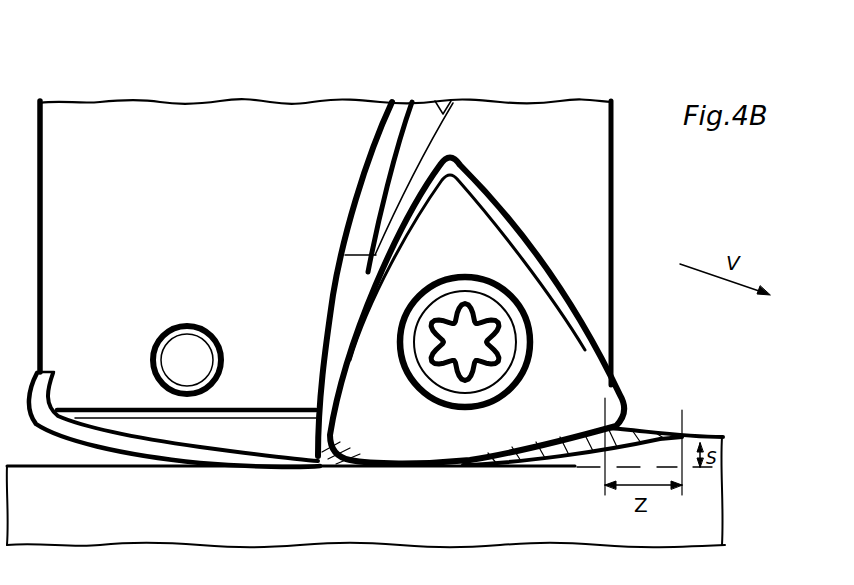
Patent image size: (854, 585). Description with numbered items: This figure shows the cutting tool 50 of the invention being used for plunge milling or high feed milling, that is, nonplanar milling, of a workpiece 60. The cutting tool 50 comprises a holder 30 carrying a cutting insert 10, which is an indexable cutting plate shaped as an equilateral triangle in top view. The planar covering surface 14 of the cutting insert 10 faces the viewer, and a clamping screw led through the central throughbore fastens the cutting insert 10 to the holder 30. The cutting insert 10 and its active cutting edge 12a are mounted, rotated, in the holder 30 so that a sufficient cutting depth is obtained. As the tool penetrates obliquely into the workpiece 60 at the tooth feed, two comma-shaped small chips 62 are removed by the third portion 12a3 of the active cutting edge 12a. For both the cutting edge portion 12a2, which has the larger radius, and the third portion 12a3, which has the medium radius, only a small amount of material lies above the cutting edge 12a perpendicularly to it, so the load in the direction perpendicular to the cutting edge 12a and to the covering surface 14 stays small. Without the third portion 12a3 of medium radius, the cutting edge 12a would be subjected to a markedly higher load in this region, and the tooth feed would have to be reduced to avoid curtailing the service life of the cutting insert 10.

The cutting tool 50 is at (567, 78).
The holder 30 is at (612, 170).
The cutting insert 10 is at (496, 251).
The covering surface 14 is at (552, 317).
The cutting edge 12a is at (527, 440).
The portion of the cutting edge 12a2 is at (487, 470).
The third portion of the cutting edge 12a3 is at (357, 467).
The chip 62 is at (316, 462).
The workpiece 60 is at (693, 443).